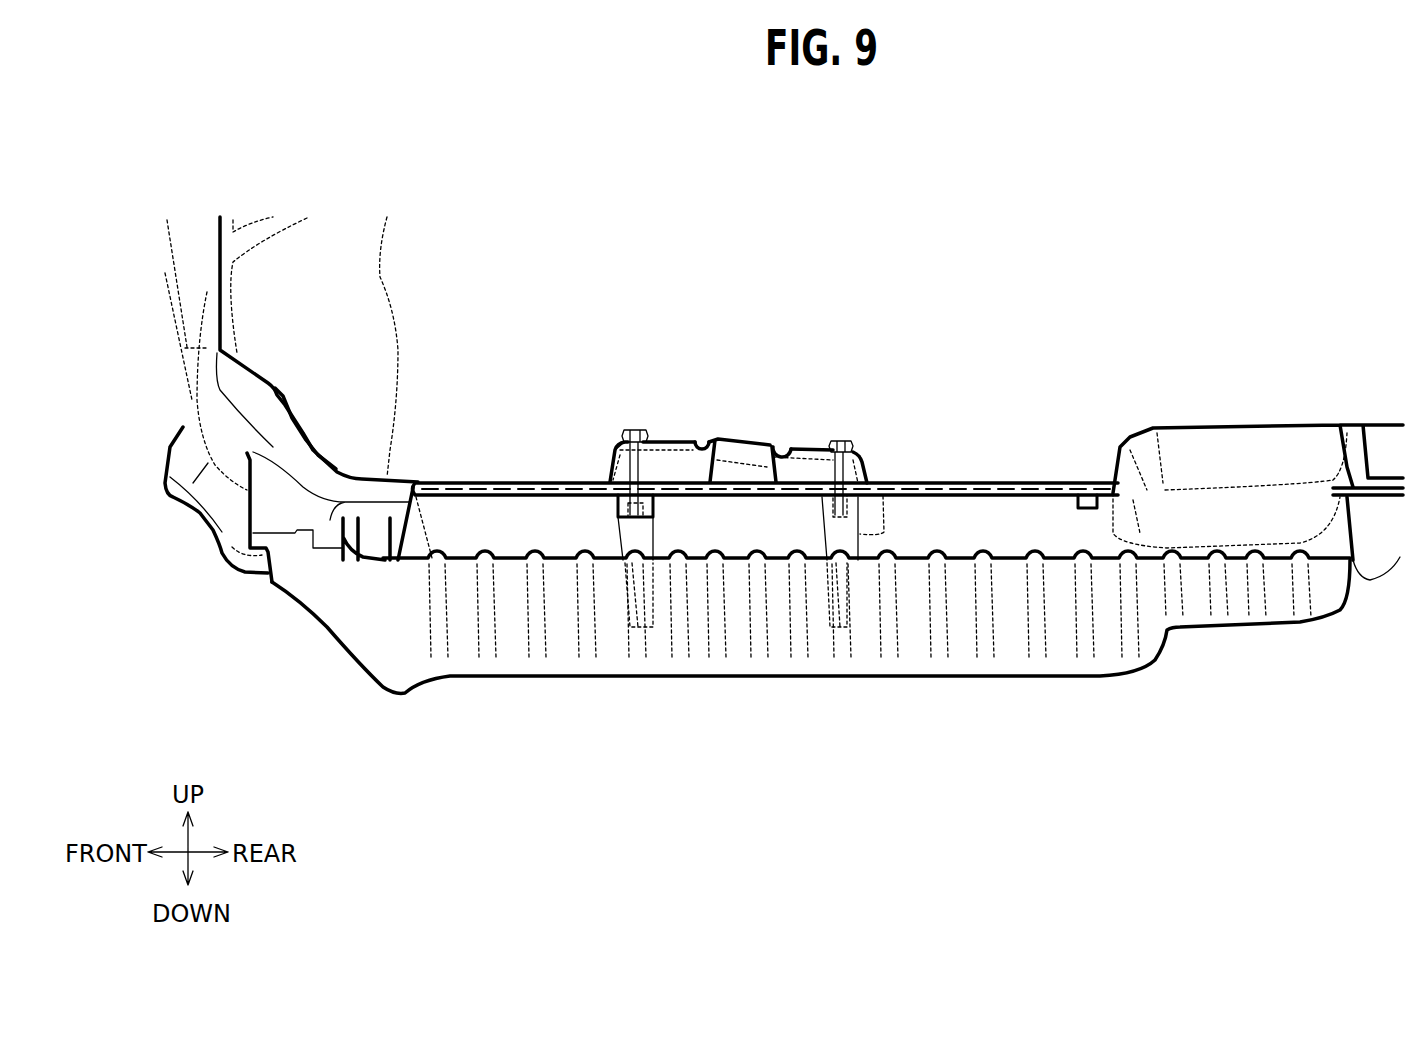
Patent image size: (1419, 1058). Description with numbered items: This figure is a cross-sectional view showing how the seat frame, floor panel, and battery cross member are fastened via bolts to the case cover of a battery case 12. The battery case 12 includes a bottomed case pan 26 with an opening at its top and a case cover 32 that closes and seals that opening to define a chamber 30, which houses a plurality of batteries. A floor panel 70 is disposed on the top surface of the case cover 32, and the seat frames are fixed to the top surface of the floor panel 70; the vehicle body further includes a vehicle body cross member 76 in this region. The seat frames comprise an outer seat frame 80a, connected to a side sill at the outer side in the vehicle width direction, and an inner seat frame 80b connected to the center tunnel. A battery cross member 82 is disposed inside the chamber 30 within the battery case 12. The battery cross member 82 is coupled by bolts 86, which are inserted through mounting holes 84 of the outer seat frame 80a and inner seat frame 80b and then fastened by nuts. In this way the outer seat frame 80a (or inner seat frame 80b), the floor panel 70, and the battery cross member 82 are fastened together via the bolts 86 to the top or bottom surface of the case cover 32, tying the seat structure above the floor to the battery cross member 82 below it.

The battery case 12 is at (703, 802).
The case pan 26 is at (861, 695).
The chamber 30 is at (766, 542).
The case cover 32 is at (1011, 472).
The floor panel 70 is at (523, 482).
The vehicle body cross member 76 is at (733, 467).
The outer seat frame 80a is at (812, 450).
The inner seat frame 80b is at (812, 450).
The battery cross member 82 is at (617, 525).
The mounting hole 84 is at (621, 442).
The bolt 86 is at (626, 432).